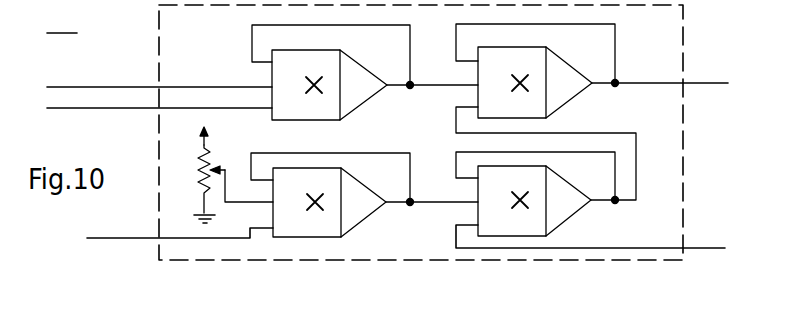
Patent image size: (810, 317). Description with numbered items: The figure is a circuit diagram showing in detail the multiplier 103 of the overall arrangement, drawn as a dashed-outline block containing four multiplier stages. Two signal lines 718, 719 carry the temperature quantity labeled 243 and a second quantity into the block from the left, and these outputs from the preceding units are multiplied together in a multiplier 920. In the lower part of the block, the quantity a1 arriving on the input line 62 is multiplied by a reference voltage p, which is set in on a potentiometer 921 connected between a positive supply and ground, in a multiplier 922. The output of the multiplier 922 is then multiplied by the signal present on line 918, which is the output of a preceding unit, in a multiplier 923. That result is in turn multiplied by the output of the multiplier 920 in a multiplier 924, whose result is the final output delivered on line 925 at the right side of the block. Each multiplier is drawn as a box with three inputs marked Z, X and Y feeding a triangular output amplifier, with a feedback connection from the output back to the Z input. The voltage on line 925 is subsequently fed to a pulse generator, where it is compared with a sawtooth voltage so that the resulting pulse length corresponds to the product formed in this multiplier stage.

The multiplier 103 is at (658, 22).
The temperature signal T_A 243 is at (62, 38).
The input line T_A 718 is at (105, 86).
The input line 1-a·b·α2 719 is at (175, 107).
The potentiometer 921 is at (203, 160).
The multiplier 920 is at (330, 110).
The multiplier 922 is at (332, 215).
The multiplier 923 is at (535, 215).
The multiplier 924 is at (535, 95).
The line 925 is at (703, 82).
The line 918 is at (703, 243).
The input line α1 62 is at (127, 236).